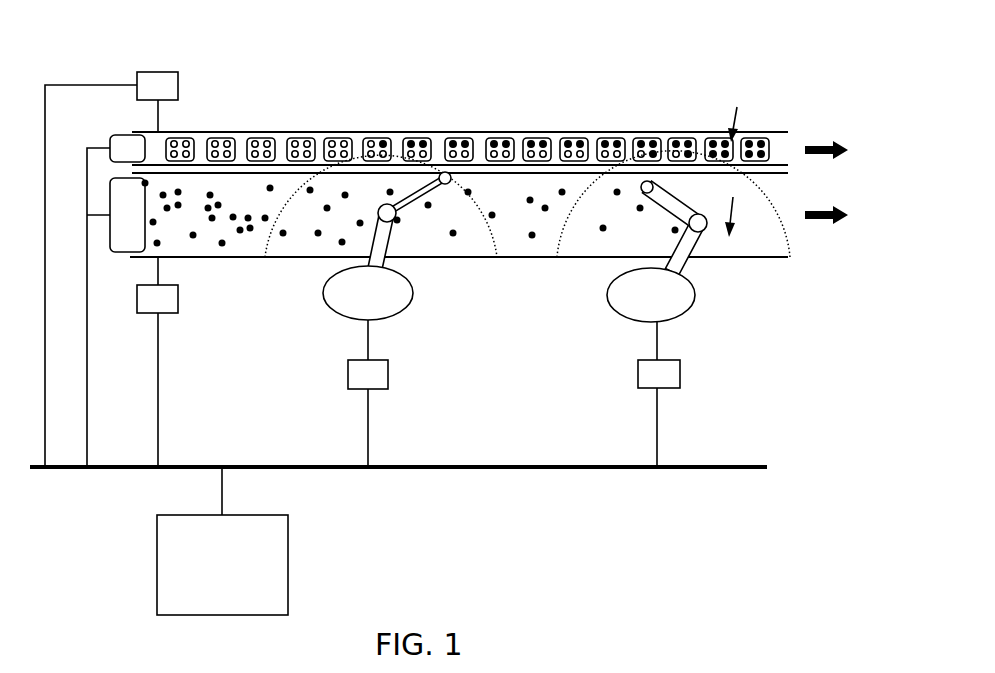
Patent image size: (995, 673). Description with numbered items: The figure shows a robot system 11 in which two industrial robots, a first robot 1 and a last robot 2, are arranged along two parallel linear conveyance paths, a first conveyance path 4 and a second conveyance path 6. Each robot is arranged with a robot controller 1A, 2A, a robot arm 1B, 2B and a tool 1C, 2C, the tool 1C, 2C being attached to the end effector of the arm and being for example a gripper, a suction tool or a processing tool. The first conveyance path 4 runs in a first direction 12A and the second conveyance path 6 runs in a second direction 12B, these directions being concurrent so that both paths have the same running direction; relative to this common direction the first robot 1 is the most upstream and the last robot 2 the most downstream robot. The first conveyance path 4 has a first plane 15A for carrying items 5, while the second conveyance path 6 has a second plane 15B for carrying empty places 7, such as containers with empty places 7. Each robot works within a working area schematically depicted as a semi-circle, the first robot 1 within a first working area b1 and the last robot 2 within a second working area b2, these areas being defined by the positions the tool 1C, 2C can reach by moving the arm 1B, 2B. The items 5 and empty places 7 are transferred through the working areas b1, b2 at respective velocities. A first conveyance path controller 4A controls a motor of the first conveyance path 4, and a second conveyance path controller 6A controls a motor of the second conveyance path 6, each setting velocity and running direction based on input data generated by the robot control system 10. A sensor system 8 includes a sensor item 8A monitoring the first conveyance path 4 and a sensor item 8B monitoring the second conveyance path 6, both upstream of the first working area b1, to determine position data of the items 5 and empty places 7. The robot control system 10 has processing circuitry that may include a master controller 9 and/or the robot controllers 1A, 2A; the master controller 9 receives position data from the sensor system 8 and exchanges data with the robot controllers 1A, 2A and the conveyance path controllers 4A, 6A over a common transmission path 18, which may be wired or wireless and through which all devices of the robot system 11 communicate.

The first robot 1 is at (368, 313).
The robot controller 1A is at (388, 373).
The robot arm 1B is at (382, 260).
The tool 1C is at (443, 172).
The last robot 2 is at (651, 314).
The robot controller 2A is at (680, 373).
The robot arm 2B is at (682, 265).
The tool 2C is at (648, 181).
The first conveyance path 4 is at (752, 262).
The first conveyance path controller 4A is at (172, 297).
The items 5 is at (317, 233).
The second conveyance path 6 is at (527, 132).
The second conveyance path controller 6A is at (175, 90).
The empty places 7 is at (307, 140).
The sensor system 8 is at (93, 125).
The sensor item 8A is at (118, 250).
The sensor item 8B is at (127, 140).
The master controller 9 is at (222, 565).
The robot control system 10 is at (338, 498).
The robot system 11 is at (277, 67).
The first direction 12A is at (820, 224).
The second direction 12B is at (820, 160).
The first plane 15A is at (735, 206).
The second plane 15B is at (737, 113).
The common transmission path 18 is at (677, 469).
The first working area b1 is at (350, 113).
The second working area b2 is at (625, 122).